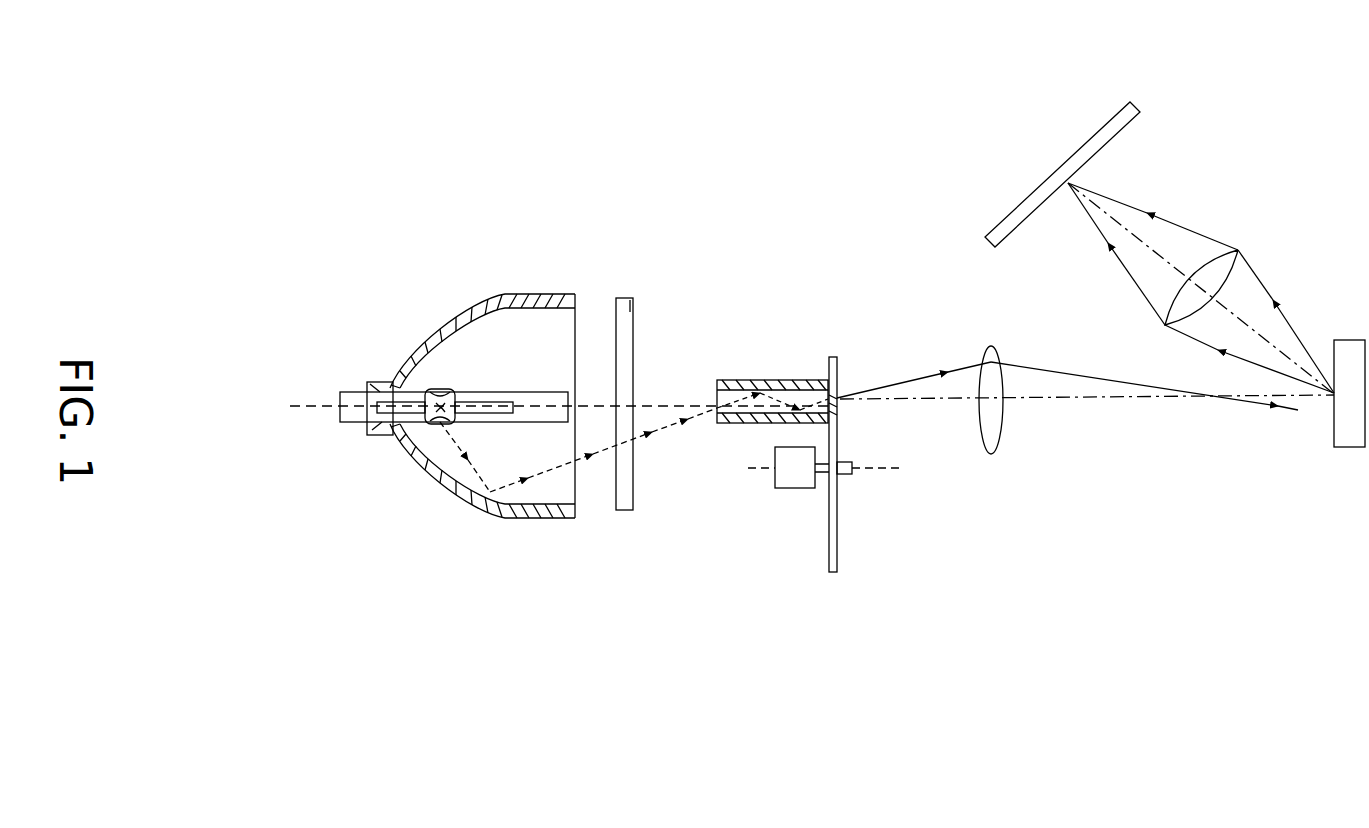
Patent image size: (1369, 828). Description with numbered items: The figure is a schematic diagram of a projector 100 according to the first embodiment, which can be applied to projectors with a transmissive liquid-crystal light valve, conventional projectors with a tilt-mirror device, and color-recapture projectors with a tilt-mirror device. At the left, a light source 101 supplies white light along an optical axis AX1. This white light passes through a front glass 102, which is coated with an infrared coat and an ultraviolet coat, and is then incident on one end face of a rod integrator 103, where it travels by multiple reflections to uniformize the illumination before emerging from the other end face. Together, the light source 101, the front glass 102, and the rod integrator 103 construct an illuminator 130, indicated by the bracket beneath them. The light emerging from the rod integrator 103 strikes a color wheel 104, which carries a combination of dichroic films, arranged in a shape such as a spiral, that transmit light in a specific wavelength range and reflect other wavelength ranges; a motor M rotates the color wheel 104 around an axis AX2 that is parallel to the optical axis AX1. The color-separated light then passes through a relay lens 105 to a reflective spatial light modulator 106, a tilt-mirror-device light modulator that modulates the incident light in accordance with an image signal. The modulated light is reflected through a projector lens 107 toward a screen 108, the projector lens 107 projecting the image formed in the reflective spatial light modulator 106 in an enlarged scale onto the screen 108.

The projector 100 is at (577, 257).
The light source 101 is at (582, 552).
The front glass 102 is at (625, 510).
The rod integrator 103 is at (775, 380).
The color wheel 104 is at (835, 575).
The relay lens 105 is at (991, 347).
The reflective spatial light modulator 106 is at (1350, 340).
The projector lens 107 is at (1216, 250).
The screen 108 is at (1093, 132).
The illuminator 130 is at (857, 652).
The optical axis AX1 is at (310, 405).
The axis AX2 is at (880, 470).